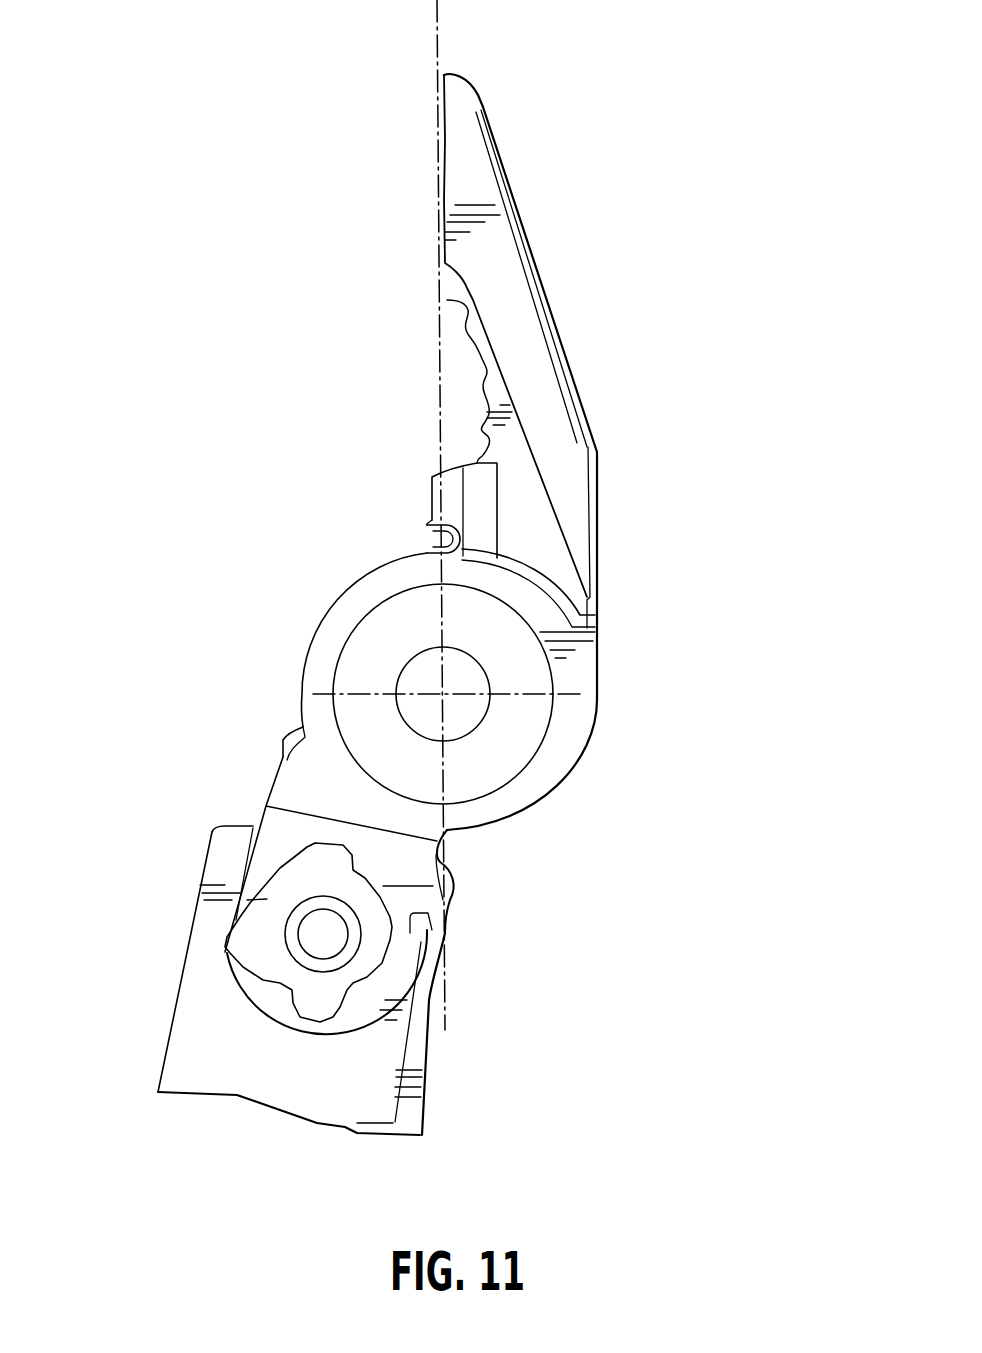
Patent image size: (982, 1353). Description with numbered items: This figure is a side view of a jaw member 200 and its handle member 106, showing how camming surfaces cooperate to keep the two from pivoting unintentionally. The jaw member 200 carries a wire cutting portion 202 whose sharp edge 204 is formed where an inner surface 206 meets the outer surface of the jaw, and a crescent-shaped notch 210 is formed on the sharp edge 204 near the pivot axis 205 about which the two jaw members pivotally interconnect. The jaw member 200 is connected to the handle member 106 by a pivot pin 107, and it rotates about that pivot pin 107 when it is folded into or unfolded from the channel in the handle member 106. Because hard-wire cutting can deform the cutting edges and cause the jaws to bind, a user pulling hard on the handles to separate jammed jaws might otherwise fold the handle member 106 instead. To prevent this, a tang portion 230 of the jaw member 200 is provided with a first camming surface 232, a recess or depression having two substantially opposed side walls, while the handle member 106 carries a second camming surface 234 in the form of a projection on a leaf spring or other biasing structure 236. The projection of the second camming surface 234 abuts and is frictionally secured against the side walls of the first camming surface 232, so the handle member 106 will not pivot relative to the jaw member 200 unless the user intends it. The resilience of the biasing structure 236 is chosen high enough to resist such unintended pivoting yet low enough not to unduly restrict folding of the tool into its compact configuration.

The handle member 106 is at (329, 946).
The pivot pin 107 is at (310, 923).
The jaw member 200 is at (520, 298).
The wire cutting portion 202 is at (273, 435).
The sharp edge 204 is at (427, 517).
The pivot axis 205 is at (470, 683).
The inner surface 206 is at (453, 518).
The notch 210 is at (427, 538).
The tang portion 230 is at (257, 982).
The first camming surface 232 is at (405, 926).
The second camming surface 234 is at (447, 928).
The biasing structure 236 is at (406, 1028).